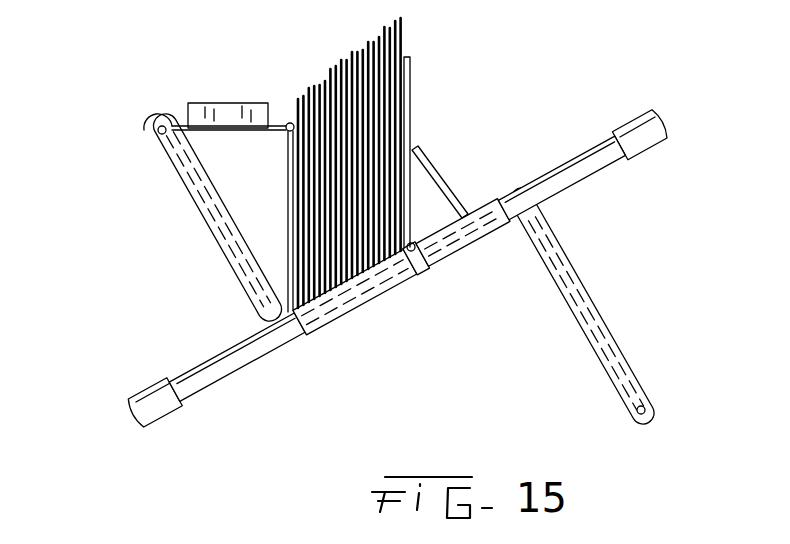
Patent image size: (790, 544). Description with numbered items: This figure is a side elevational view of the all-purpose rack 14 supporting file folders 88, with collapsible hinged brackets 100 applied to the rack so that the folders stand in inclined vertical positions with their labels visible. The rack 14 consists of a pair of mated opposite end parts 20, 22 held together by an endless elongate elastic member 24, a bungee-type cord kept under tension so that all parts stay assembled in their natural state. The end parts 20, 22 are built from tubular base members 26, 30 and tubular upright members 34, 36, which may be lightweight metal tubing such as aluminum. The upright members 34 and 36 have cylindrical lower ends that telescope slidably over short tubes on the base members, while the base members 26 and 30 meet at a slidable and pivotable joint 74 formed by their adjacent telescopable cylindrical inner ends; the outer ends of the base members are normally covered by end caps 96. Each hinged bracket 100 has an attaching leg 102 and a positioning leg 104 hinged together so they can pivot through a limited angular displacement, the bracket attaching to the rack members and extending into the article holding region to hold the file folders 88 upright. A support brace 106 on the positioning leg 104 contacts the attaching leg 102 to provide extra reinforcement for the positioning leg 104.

The all-purpose rack 14 is at (391, 243).
The end part 20 is at (391, 289).
The end part 22 is at (518, 276).
The endless elongate elastic member 24 is at (405, 269).
The tubular base member 26 is at (200, 374).
The tubular base member 30 is at (583, 186).
The tubular upright member 34 is at (188, 193).
The tubular upright member 36 is at (628, 362).
The joint 74 is at (368, 326).
The file folders 88 is at (347, 65).
The end cap 96 is at (138, 407).
The collapsible hinged bracket 100 is at (229, 94).
The attaching leg 102 is at (222, 131).
The positioning leg 104 is at (412, 77).
The support brace 106 is at (433, 168).